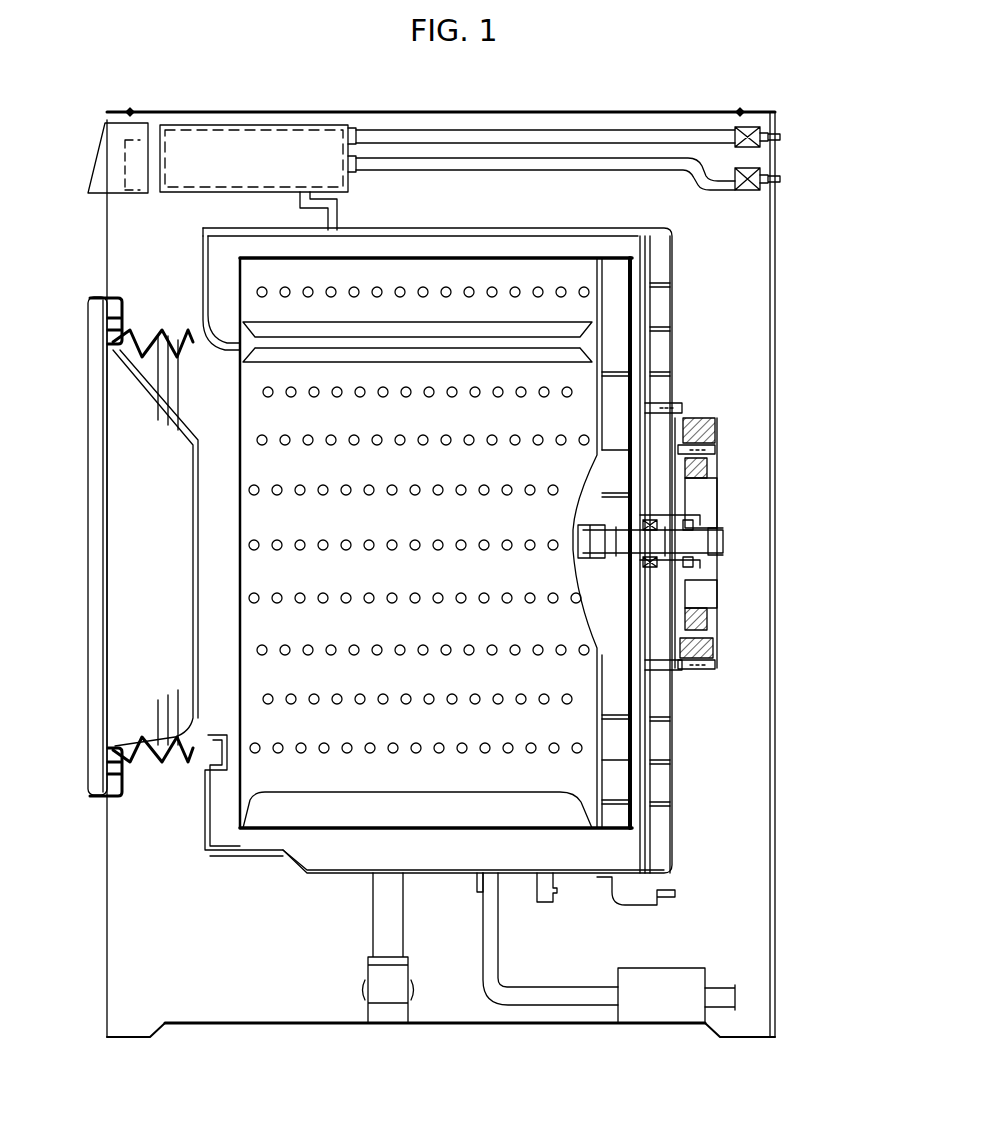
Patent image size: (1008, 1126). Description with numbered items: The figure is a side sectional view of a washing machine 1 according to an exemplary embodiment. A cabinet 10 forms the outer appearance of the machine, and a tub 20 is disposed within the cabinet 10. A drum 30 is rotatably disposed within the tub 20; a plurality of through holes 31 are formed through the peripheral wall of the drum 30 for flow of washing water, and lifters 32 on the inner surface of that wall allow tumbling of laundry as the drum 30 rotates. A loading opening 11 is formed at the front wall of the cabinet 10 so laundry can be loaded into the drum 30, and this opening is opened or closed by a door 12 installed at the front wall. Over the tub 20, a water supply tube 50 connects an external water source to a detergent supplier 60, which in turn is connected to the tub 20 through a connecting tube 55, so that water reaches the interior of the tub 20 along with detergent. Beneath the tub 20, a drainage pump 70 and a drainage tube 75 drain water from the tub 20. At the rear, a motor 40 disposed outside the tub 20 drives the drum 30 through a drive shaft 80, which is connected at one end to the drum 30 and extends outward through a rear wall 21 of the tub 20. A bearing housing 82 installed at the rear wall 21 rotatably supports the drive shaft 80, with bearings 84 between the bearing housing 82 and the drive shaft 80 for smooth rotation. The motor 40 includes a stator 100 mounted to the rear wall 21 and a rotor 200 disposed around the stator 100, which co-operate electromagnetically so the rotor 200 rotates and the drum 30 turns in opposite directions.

The washing machine 1 is at (445, 1084).
The cabinet 10 is at (775, 248).
The loading opening 11 is at (169, 360).
The door 12 is at (88, 553).
The tub 20 is at (512, 232).
The rear wall of the tub 21 is at (648, 392).
The drum 30 is at (436, 507).
The through holes 31 is at (425, 486).
The lifters 32 is at (441, 792).
The motor 40 is at (784, 528).
The water supply tube 50 is at (548, 130).
The connecting tube 55 is at (337, 208).
The detergent supplier 60 is at (236, 126).
The drainage pump 70 is at (661, 969).
The drainage tube 75 is at (498, 945).
The drive shaft 80 is at (710, 550).
The bearing housing 82 is at (705, 524).
The bearings 84 is at (712, 573).
The stator 100 is at (712, 432).
The rotor 200 is at (712, 456).